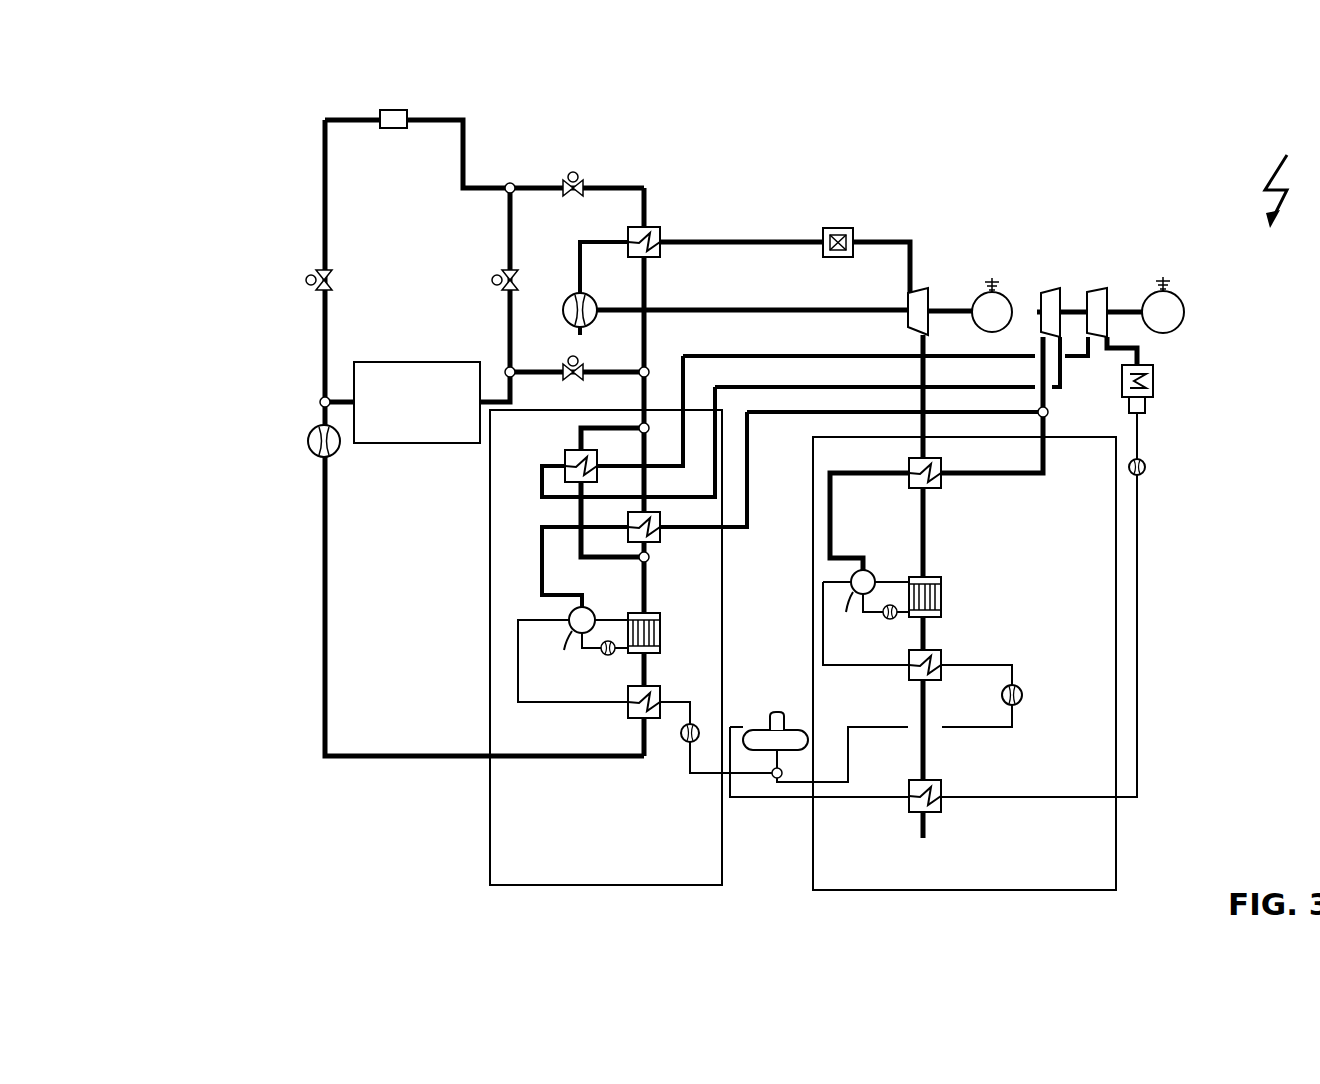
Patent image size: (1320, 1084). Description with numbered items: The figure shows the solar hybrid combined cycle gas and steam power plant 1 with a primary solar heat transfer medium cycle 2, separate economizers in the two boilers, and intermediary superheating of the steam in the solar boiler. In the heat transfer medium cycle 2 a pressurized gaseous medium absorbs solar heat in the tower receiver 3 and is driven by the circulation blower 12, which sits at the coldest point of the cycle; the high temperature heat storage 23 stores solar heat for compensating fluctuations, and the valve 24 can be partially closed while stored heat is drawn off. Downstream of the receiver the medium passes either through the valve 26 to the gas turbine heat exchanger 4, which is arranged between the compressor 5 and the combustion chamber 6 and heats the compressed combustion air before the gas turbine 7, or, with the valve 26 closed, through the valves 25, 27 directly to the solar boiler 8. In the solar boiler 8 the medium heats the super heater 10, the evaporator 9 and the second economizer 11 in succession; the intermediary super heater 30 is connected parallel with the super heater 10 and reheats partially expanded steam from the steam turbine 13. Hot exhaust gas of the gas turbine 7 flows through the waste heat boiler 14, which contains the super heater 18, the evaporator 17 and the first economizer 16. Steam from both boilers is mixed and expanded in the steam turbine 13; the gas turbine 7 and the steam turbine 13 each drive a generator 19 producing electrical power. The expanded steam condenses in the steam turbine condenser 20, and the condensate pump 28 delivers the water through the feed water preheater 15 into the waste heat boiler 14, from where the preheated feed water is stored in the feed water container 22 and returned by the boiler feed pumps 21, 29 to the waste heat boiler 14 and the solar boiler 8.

The solar hybrid combined cycle gas and steam power plant 1 is at (1285, 178).
The heat transfer medium cycle 2 is at (322, 367).
The tower receiver 3 is at (393, 128).
The gas turbine heat exchanger 4 is at (657, 228).
The compressor 5 is at (570, 295).
The combustion chamber 6 is at (850, 227).
The gas turbine 7 is at (930, 293).
The solar boiler 8 is at (488, 633).
The evaporator 9 is at (655, 617).
The super heater 10 is at (657, 533).
The second economizer 11 is at (655, 687).
The circulation blower 12 is at (308, 428).
The steam turbine 13 is at (1060, 288).
The waste heat boiler 14 is at (813, 613).
The feed water preheater 15 is at (942, 813).
The first economizer 16 is at (942, 668).
The evaporator 17 is at (942, 593).
The super heater 18 is at (942, 488).
The generator 19 is at (1198, 257).
The steam turbine condenser 20 is at (1153, 377).
The boiler feed pump 21 is at (1022, 700).
The feed water container 22 is at (777, 713).
The high temperature heat storage 23 is at (376, 443).
The valve 24 is at (320, 272).
The valve 25 is at (503, 272).
The valve 26 is at (580, 182).
The valve 27 is at (568, 367).
The condensate pump 28 is at (1143, 458).
The boiler feed pump 29 is at (683, 740).
The intermediary super heater 30 is at (567, 455).